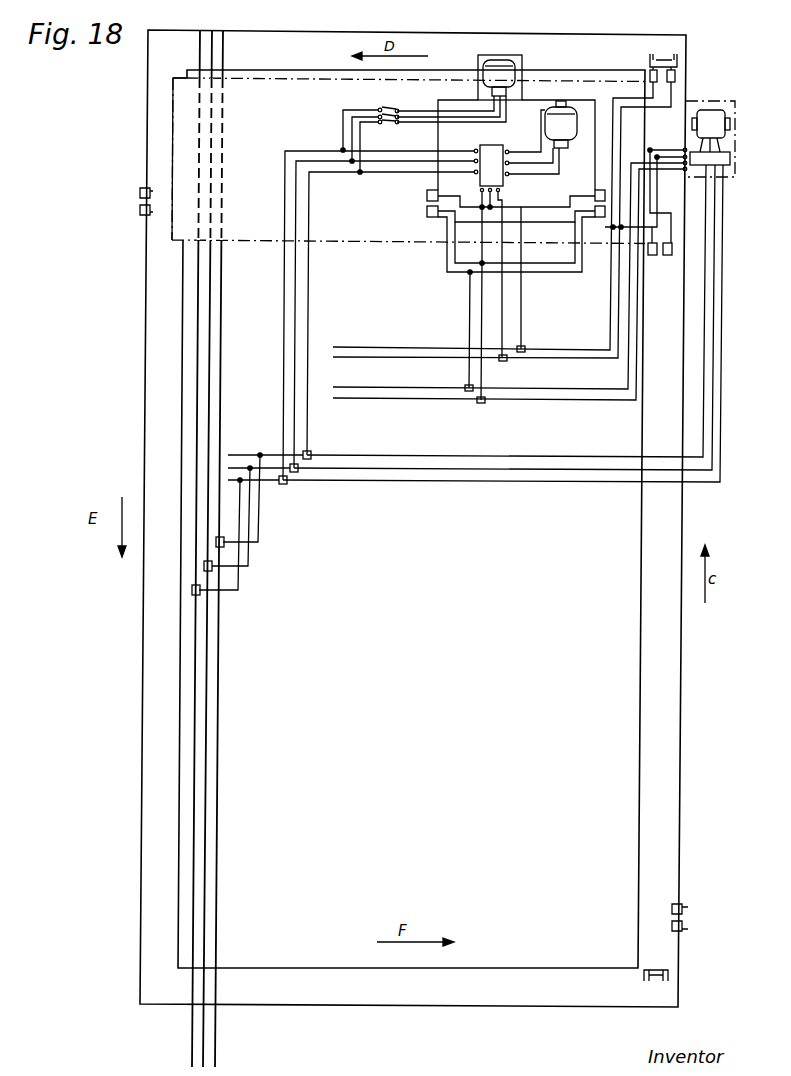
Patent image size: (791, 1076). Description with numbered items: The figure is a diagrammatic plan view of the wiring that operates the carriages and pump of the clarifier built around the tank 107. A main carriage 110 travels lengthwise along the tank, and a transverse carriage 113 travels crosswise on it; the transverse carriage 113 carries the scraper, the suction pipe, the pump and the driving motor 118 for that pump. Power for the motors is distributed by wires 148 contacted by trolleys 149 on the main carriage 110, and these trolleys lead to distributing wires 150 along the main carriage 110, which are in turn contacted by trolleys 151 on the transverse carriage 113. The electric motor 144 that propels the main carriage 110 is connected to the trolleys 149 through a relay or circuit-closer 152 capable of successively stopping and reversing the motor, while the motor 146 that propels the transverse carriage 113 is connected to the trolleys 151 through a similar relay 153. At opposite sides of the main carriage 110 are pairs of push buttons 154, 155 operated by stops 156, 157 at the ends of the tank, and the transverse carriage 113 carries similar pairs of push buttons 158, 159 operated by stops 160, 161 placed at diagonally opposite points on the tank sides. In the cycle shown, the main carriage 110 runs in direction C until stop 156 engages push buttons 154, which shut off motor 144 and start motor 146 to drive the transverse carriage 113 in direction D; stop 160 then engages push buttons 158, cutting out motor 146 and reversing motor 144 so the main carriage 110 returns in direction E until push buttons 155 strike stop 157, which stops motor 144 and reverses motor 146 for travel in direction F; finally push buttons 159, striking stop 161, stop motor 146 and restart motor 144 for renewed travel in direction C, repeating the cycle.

The tank 107 is at (638, 618).
The main carriage 110 is at (256, 82).
The transverse carriage 113 is at (452, 182).
The driving motor 118 is at (498, 72).
The electric motor 144 is at (712, 118).
The motor 146 is at (545, 123).
The wires 148 is at (202, 688).
The trolleys 149 is at (202, 596).
The distributing wires 150 is at (443, 464).
The trolleys 151 is at (287, 480).
The relay or circuit-closer 152 is at (730, 160).
The relay 153 is at (484, 147).
The push buttons 154 is at (676, 77).
The push buttons 155 is at (674, 252).
The stop 156 is at (678, 61).
The stop 157 is at (670, 976).
The push buttons 158 is at (425, 203).
The push buttons 159 is at (600, 196).
The stop 160 is at (140, 200).
The stop 161 is at (688, 918).